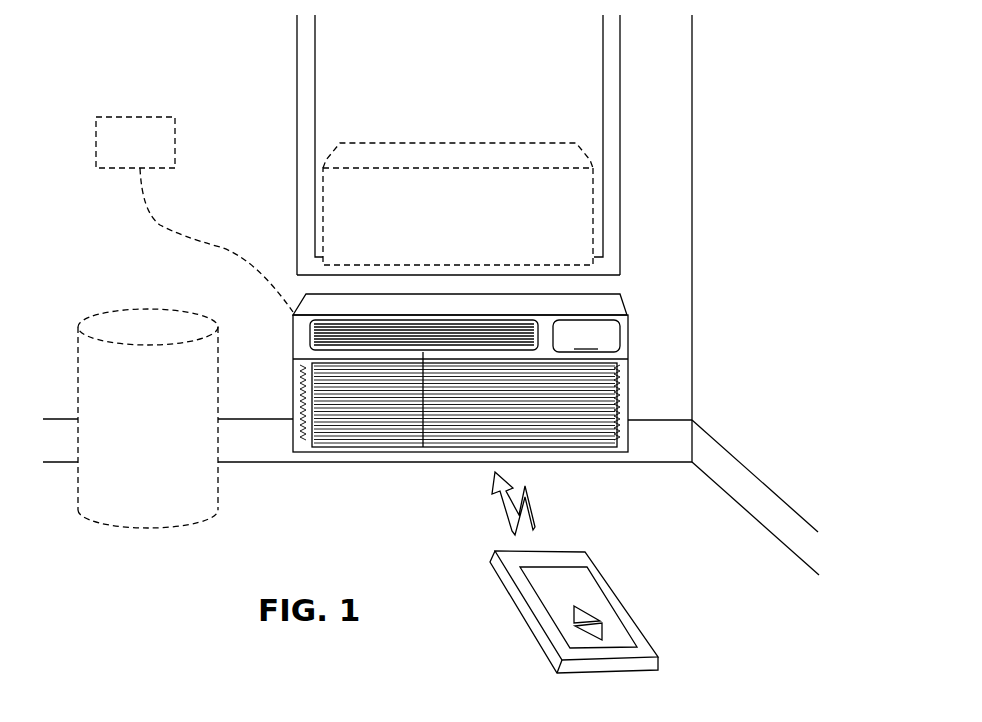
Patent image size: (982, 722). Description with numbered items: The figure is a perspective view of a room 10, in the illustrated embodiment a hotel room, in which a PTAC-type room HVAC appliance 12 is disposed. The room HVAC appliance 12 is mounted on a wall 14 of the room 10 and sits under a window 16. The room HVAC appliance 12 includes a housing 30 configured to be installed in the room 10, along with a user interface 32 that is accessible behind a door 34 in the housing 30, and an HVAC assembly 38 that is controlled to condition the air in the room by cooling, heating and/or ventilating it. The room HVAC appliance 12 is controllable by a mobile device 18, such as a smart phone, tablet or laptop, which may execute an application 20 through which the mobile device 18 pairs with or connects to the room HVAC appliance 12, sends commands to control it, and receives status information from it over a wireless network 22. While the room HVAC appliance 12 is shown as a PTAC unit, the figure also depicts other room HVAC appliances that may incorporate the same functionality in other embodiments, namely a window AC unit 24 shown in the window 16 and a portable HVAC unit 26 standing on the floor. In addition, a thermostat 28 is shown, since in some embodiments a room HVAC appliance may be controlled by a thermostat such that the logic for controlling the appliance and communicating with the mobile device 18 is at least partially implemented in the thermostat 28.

The room 10 is at (192, 102).
The room HVAC appliance 12 is at (457, 385).
The wall 14 is at (204, 228).
The window 16 is at (297, 100).
The mobile device 18 is at (546, 593).
The application 20 is at (583, 570).
The wireless network 22 is at (542, 525).
The window AC unit 24 is at (402, 145).
The portable HVAC unit 26 is at (112, 311).
The thermostat 28 is at (112, 128).
The housing 30 is at (623, 298).
The user interface 32 is at (613, 324).
The door 34 is at (620, 343).
The HVAC assembly 38 is at (373, 443).